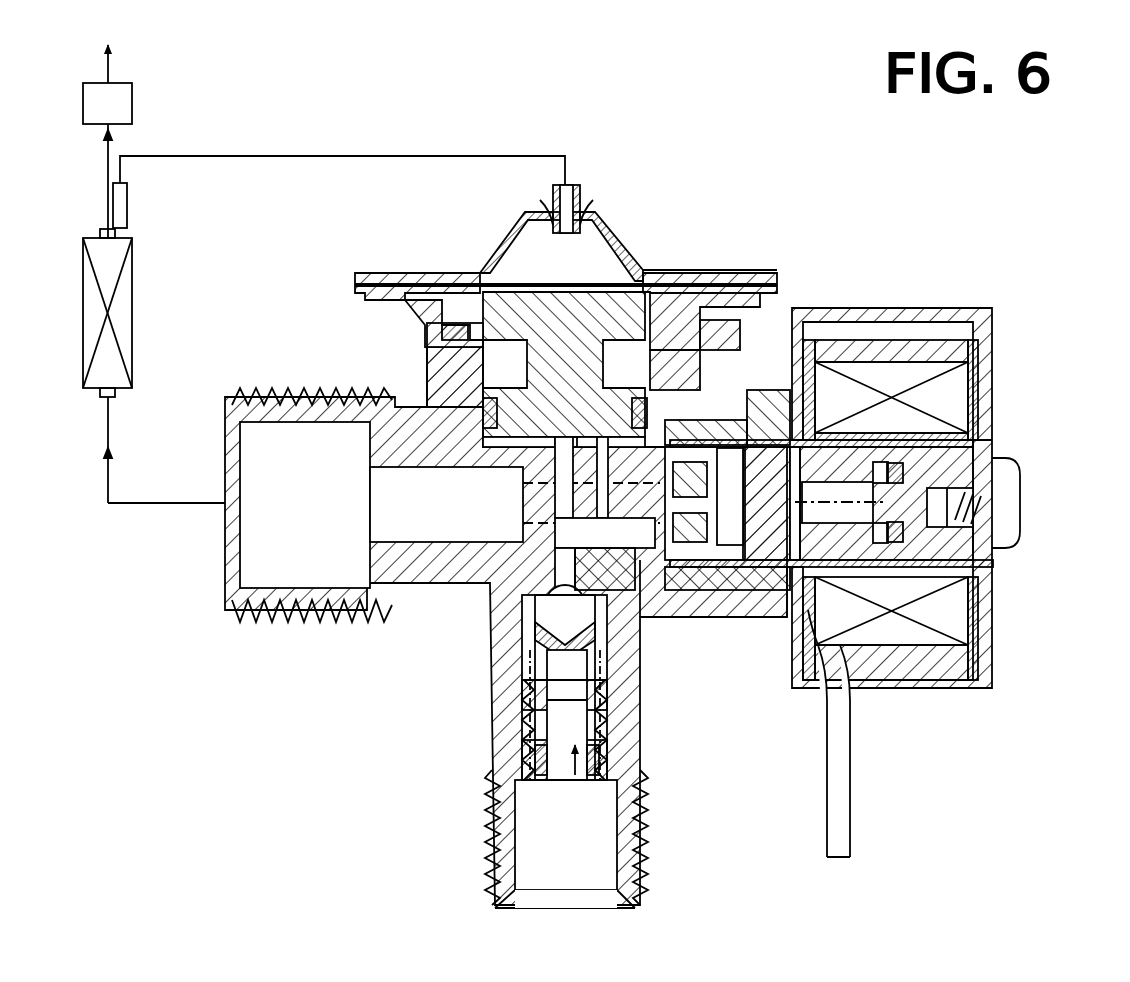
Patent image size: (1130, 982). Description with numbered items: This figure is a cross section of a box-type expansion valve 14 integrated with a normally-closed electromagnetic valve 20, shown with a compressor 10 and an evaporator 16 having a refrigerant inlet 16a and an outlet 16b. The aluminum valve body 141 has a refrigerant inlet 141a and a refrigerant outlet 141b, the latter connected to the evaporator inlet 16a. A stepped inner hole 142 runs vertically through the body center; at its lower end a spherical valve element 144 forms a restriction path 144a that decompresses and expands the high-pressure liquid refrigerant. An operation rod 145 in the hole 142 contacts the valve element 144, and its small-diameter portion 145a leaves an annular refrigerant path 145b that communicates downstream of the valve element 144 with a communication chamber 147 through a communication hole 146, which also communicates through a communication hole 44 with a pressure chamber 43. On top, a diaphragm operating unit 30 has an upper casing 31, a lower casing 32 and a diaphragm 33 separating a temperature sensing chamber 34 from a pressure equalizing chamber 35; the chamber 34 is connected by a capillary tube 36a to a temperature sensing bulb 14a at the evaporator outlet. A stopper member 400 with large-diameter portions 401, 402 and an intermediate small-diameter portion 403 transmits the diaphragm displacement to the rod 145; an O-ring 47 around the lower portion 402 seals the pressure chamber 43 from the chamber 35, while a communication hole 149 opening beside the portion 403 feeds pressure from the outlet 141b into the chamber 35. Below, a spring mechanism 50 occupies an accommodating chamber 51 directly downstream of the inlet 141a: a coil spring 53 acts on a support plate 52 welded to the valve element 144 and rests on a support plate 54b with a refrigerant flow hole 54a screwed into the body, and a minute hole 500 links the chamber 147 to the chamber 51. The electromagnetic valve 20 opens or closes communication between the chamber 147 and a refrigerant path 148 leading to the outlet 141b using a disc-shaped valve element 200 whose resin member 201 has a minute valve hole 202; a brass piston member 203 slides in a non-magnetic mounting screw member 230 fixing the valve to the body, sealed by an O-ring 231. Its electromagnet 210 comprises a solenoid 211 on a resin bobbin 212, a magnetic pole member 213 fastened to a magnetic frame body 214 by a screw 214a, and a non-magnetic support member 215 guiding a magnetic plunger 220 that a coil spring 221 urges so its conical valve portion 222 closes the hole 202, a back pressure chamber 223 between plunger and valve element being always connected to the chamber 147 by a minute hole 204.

The compressor 10 is at (132, 103).
The expansion valve 14 is at (428, 597).
The temperature sensing bulb 14a is at (127, 198).
The evaporator 16 is at (132, 288).
The refrigerant inlet of the evaporator 16a is at (115, 393).
The outlet of the evaporator 16b is at (115, 233).
The normally-closed type electromagnetic valve 20 is at (1003, 424).
The diaphragm operating unit 30 is at (447, 255).
The upper casing 31 is at (680, 275).
The lower casing 32 is at (740, 300).
The diaphragm 33 is at (720, 285).
The temperature sensing chamber 34 is at (593, 245).
The pressure equalizing chamber 35 is at (440, 290).
The capillary tube 36a is at (458, 156).
The pressure chamber 43 is at (755, 345).
The communication hole 44 is at (612, 592).
The rubber O-ring 47 is at (445, 410).
The spring mechanism 50 is at (560, 775).
The accommodating chamber 51 is at (580, 792).
The support plate 52 is at (600, 762).
The coil spring 53 is at (522, 702).
The refrigerant flow hole 54a is at (505, 852).
The support plate 54b is at (520, 782).
The valve body 141 is at (355, 612).
The refrigerant inlet 141a is at (500, 895).
The refrigerant outlet 141b is at (265, 548).
The stepped inner hole 142 is at (372, 500).
The spherical valve element 144 is at (525, 642).
The restriction path 144a is at (532, 618).
The operation rod 145 is at (556, 490).
The small-diameter portion 145a is at (555, 532).
The annular refrigerant path 145b is at (560, 565).
The communication hole 146 is at (610, 632).
The communication chamber 147 is at (642, 602).
The refrigerant path 148 is at (700, 372).
The communication hole 149 is at (400, 430).
The valve element 200 is at (827, 580).
The resin member 201 is at (745, 562).
The minute valve hole 202 is at (700, 552).
The piston member 203 is at (770, 562).
The minute hole 204 is at (770, 423).
The electromagnet 210 is at (1000, 308).
The solenoid 211 is at (995, 374).
The resin bobbin 212 is at (953, 392).
The magnetic pole member 213 is at (1000, 470).
The magnetic frame body 214 is at (985, 600).
The screw 214a is at (1005, 519).
The support member 215 is at (985, 447).
The plunger 220 is at (985, 638).
The coil spring 221 is at (985, 560).
The valve portion 222 is at (873, 575).
The back pressure chamber 223 is at (1000, 494).
The mounting screw member 230 is at (860, 380).
The rubber O-ring 231 is at (797, 680).
The stopper member 400 is at (594, 305).
The large-diameter portion 401 is at (643, 333).
The large-diameter portion 402 is at (745, 330).
The small-diameter portion 403 is at (550, 350).
The minute hole 500 is at (600, 692).